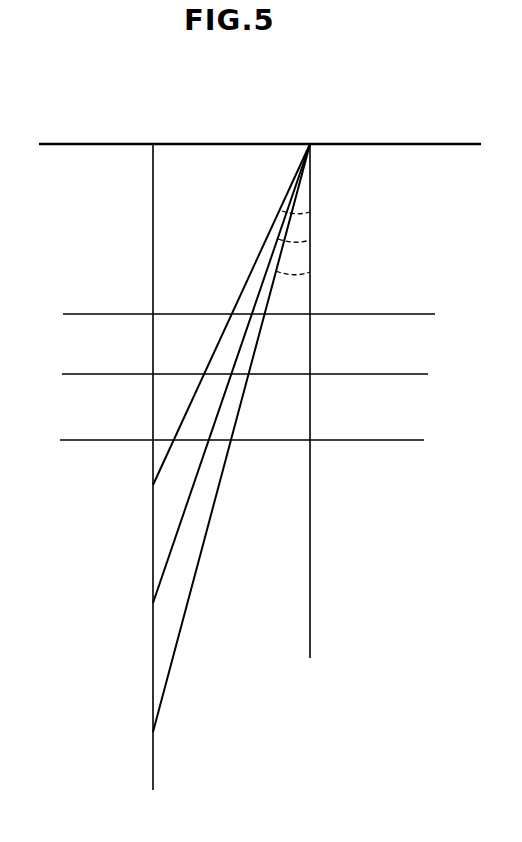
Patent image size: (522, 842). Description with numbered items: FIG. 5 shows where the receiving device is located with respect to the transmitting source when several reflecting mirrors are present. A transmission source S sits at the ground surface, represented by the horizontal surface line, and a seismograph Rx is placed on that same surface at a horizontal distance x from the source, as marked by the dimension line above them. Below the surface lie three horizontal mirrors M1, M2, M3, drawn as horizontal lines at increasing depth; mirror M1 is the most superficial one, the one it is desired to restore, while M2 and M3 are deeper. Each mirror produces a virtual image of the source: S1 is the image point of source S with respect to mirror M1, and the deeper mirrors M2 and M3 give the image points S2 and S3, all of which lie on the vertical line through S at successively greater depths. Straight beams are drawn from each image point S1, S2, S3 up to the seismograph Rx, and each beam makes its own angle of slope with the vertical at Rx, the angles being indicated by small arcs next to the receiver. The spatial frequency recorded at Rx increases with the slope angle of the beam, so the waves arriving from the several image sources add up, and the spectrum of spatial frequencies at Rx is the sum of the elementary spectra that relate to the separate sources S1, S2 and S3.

The distance x is at (153, 109).
The transmission source S is at (149, 453).
The seismograph Rx is at (321, 387).
The image point of source with respect to mirror M1 S1 is at (220, 320).
The image point of source with respect to mirror M2 S2 is at (220, 379).
The image point of source with respect to mirror M3 S3 is at (220, 444).
The mirror M1 is at (240, 307).
The mirror M2 is at (235, 374).
The mirror M3 is at (234, 438).